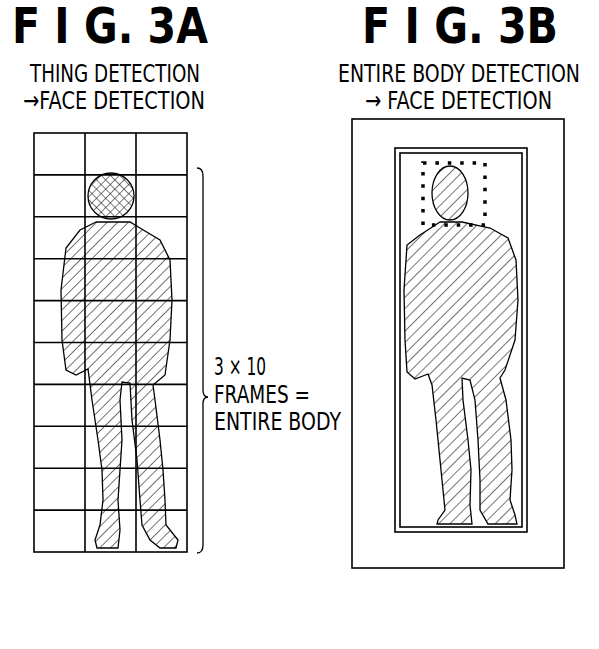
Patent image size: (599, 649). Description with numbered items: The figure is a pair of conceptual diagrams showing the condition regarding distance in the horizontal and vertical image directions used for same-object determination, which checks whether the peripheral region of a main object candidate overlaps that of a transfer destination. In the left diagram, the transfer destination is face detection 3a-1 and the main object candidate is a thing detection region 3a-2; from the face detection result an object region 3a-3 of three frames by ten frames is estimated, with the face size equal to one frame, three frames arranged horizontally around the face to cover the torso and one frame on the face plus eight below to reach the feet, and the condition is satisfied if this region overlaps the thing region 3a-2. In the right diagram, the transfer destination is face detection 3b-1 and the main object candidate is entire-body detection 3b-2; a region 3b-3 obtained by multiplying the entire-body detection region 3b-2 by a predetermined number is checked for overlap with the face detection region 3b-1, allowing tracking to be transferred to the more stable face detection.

In FIG. 3A, the face detection 3a-1 is at (133, 178).
In FIG. 3A, the thing detection region 3a-2 is at (120, 368).
In FIG. 3A, the estimated object region 3a-3 is at (187, 133).
In FIG. 3B, the face detection region 3b-1 is at (420, 201).
In FIG. 3B, the entire-body detection region 3b-2 is at (400, 300).
In FIG. 3B, the enlarged region 3b-3 is at (352, 243).